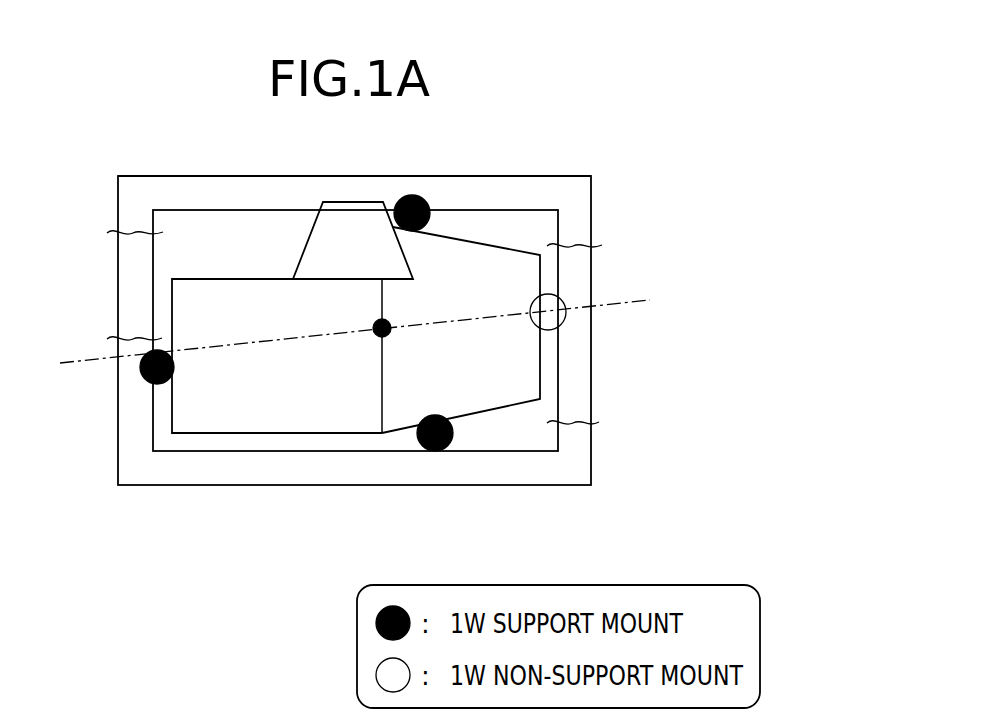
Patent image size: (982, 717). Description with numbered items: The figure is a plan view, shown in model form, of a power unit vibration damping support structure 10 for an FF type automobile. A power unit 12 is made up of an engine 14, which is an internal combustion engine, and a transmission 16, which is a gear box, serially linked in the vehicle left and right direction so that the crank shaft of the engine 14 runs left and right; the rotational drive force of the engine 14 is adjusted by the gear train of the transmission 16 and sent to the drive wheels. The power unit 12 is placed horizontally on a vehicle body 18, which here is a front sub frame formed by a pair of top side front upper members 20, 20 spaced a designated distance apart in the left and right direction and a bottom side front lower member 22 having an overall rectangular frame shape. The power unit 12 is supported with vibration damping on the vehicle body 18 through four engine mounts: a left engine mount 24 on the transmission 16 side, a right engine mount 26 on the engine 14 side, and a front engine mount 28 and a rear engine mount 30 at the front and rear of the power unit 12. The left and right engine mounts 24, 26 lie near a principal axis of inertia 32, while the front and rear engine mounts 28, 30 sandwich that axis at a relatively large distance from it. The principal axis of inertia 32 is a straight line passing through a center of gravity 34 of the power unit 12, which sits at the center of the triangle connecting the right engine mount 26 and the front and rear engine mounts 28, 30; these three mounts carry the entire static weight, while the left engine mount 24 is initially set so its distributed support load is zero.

The power unit vibration damping support structure 10 is at (596, 140).
The power unit 12 is at (283, 450).
The engine 14 is at (228, 425).
The transmission 16 is at (490, 398).
The vehicle body 18 is at (114, 193).
The front upper member 20 is at (133, 271).
The front lower member 22 is at (235, 193).
The left engine mount 24 is at (546, 306).
The right engine mount 26 is at (144, 370).
The front engine mount 28 is at (436, 448).
The rear engine mount 30 is at (413, 200).
The principal axis of inertia 32 is at (68, 362).
The center of gravity 34 is at (377, 333).